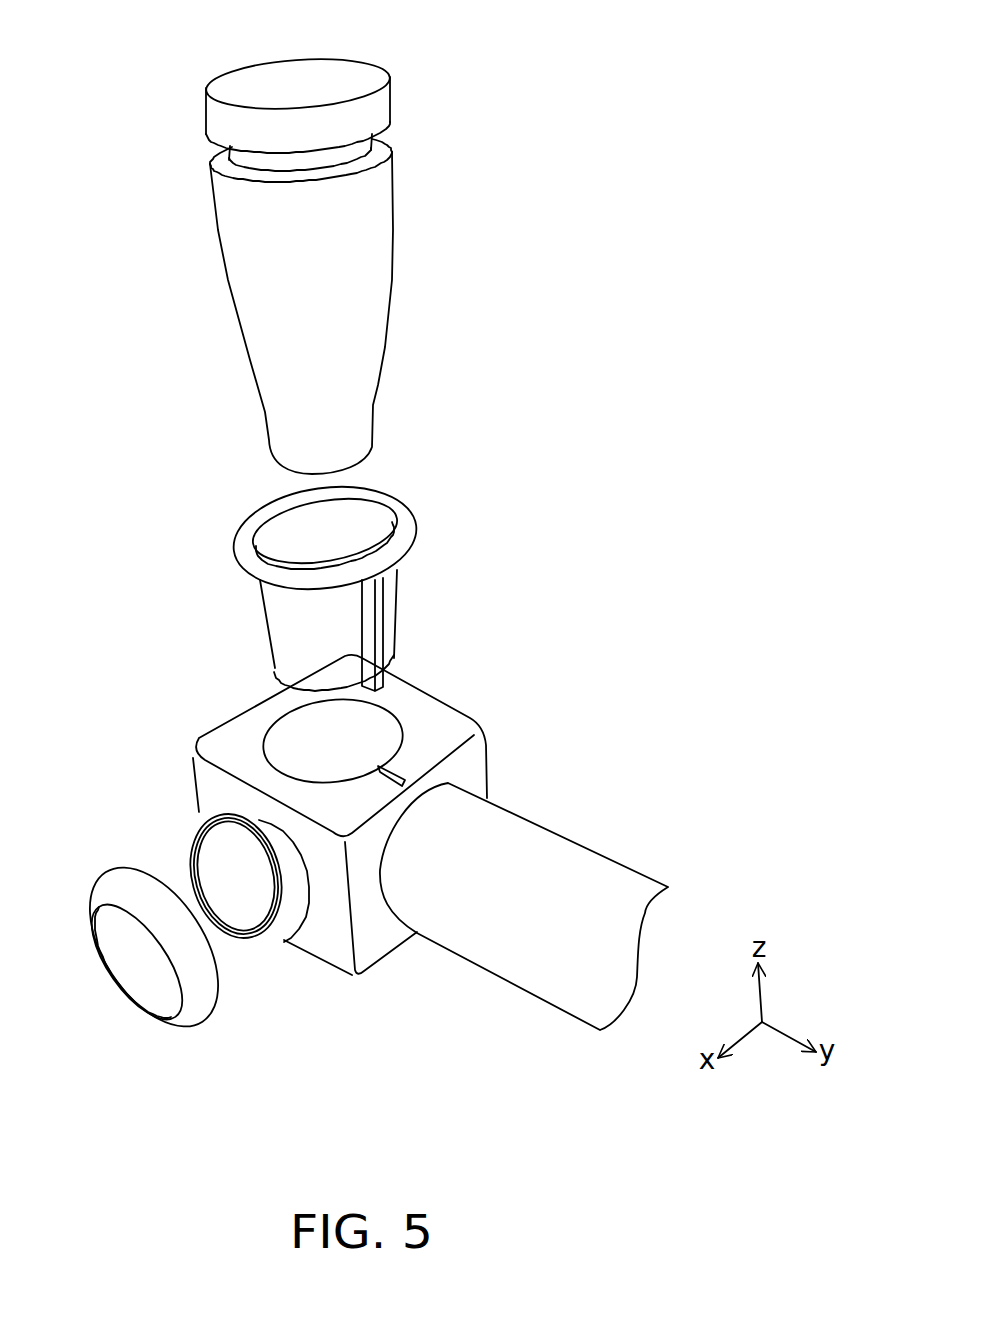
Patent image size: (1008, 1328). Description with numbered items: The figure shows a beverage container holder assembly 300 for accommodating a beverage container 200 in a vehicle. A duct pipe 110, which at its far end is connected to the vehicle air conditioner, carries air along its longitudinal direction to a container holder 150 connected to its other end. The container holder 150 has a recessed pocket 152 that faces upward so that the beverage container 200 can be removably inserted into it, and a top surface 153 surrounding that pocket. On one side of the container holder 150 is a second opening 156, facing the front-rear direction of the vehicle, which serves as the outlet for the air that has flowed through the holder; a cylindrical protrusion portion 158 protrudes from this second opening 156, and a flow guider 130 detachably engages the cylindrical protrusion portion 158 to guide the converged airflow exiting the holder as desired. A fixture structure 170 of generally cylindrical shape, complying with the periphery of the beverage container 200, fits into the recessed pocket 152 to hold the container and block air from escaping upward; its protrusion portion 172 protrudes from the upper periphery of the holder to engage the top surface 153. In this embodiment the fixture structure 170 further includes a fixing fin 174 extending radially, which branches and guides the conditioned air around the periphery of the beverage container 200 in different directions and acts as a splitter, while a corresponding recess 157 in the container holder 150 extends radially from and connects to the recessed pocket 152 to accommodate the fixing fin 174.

The beverage container 200 is at (310, 72).
The protrusion portion 172 is at (376, 505).
The fixing fin 174 is at (380, 617).
The fixture structure 170 is at (330, 564).
The beverage container holder assembly 300 is at (597, 672).
The recessed pocket 152 is at (307, 735).
The top surface 153 is at (447, 730).
The cylindrical protrusion portion 158 is at (226, 822).
The recess 157 is at (404, 772).
The duct pipe 110 is at (576, 858).
The second opening 156 is at (266, 895).
The container holder 150 is at (348, 854).
The flow guider 130 is at (188, 1013).